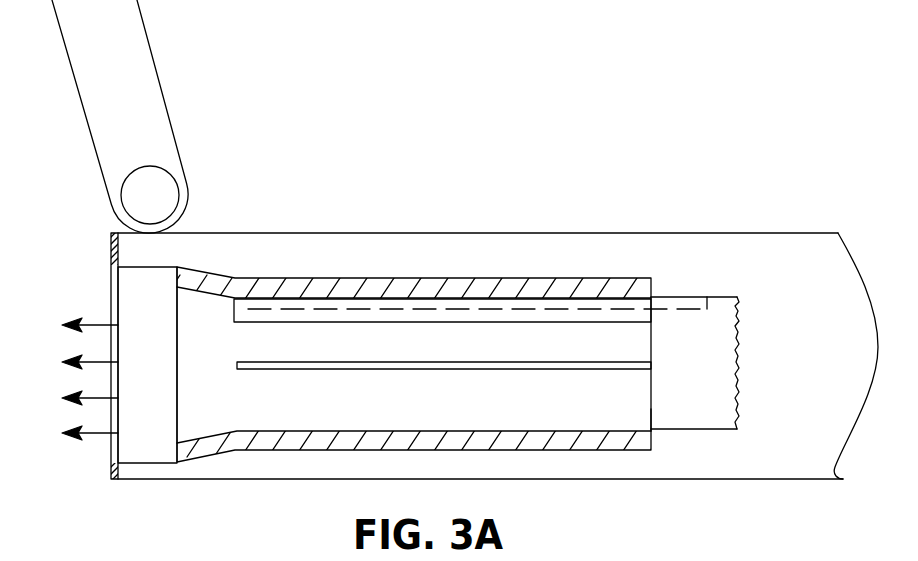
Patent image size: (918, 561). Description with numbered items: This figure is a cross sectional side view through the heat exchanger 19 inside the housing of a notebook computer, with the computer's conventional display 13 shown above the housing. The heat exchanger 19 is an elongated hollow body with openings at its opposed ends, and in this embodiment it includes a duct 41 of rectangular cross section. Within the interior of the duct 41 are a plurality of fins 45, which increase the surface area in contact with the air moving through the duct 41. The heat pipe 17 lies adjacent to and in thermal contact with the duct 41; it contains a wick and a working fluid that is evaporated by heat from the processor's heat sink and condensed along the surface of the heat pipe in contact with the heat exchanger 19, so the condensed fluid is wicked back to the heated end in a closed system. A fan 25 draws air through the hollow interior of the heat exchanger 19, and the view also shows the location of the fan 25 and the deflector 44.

The display 13 is at (158, 75).
The heat pipe 17 is at (370, 308).
The heat exchanger 19 is at (449, 357).
The fan 25 is at (150, 465).
The duct 41 is at (440, 438).
The deflector 44 is at (695, 430).
The fins 45 is at (270, 370).